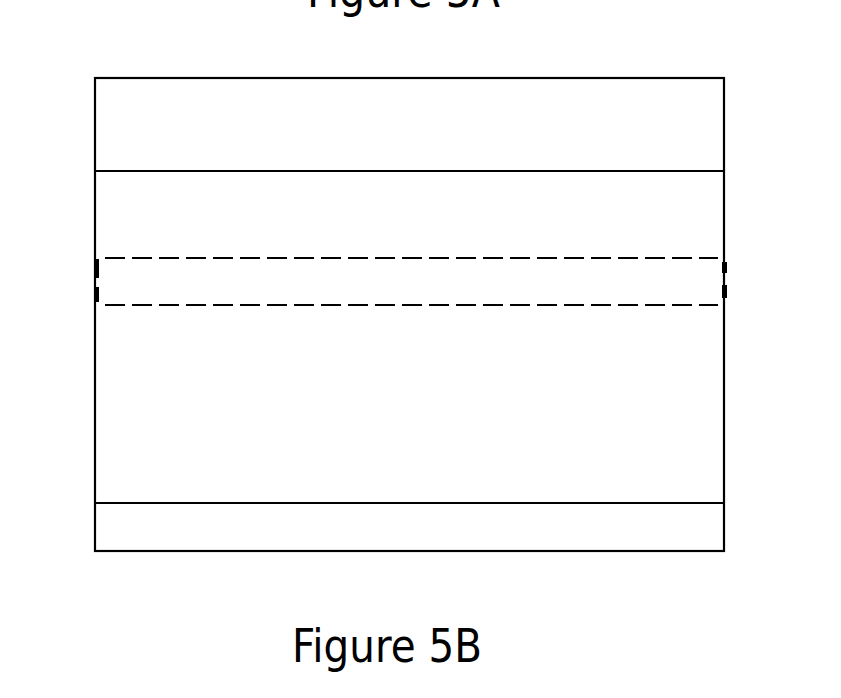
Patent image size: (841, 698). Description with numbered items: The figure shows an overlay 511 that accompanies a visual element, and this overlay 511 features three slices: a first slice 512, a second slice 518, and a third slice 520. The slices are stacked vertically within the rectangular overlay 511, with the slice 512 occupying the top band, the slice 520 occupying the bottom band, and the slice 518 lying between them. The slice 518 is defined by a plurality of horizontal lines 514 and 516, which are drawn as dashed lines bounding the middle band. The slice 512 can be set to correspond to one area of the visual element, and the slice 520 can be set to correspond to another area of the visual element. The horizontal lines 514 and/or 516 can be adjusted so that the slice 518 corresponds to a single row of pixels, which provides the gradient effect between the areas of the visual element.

The overlay 511 is at (582, 63).
The slice 512 is at (457, 136).
The horizontal line 514 is at (107, 258).
The horizontal line 516 is at (135, 305).
The slice 518 is at (443, 294).
The slice 520 is at (487, 536).